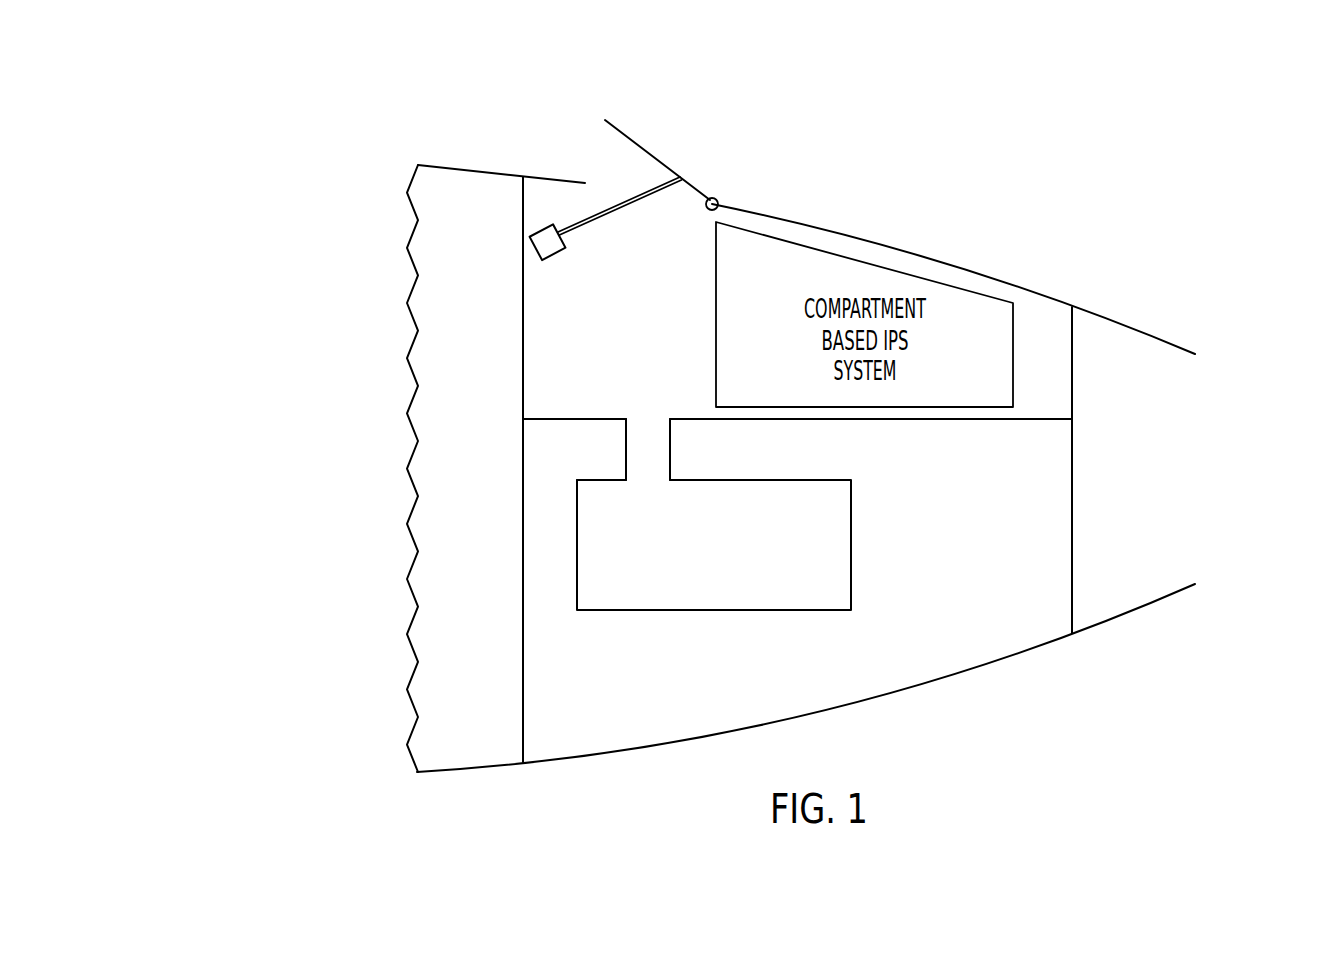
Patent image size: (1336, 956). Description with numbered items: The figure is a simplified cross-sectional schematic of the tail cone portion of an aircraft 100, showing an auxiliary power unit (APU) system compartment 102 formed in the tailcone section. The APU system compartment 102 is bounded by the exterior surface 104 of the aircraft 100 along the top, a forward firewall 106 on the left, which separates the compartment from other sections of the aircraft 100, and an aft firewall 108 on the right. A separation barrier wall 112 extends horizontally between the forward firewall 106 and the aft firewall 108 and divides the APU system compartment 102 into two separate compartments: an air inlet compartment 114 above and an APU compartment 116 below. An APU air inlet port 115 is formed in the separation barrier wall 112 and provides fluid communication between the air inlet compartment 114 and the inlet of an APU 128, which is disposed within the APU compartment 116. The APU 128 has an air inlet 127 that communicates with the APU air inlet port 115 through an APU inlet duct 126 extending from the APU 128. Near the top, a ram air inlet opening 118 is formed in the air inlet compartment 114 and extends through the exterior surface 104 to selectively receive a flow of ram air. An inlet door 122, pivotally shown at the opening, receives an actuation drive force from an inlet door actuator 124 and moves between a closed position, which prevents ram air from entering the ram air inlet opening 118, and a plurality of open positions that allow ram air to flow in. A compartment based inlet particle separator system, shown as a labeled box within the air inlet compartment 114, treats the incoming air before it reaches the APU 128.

The aircraft 100 is at (288, 122).
The auxiliary power unit (APU) system compartment 102 is at (1162, 544).
The exterior surface 104 is at (818, 225).
The forward firewall 106 is at (523, 521).
The aft firewall 108 is at (1072, 377).
The separation barrier wall 112 is at (975, 422).
The air inlet compartment 114 is at (693, 340).
The APU air inlet port 115 is at (637, 422).
The APU compartment 116 is at (948, 633).
The ram air inlet opening 118 is at (592, 153).
The inlet door 122 is at (627, 132).
The inlet door actuator 124 is at (565, 245).
The APU inlet duct 126 is at (626, 448).
The air inlet 127 is at (653, 478).
The APU 128 is at (851, 545).